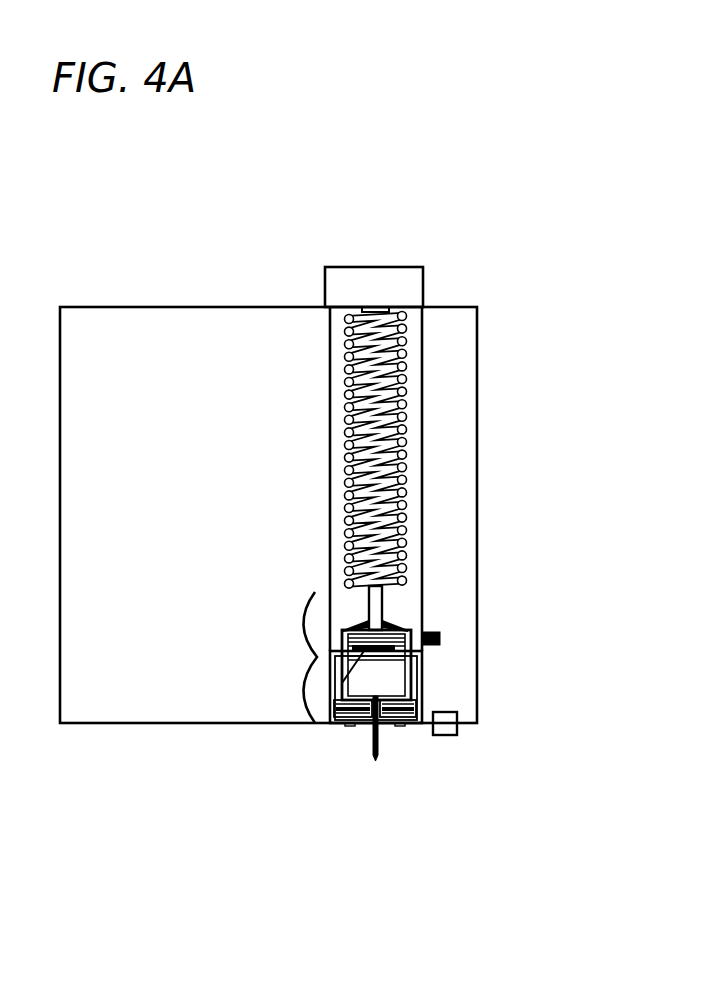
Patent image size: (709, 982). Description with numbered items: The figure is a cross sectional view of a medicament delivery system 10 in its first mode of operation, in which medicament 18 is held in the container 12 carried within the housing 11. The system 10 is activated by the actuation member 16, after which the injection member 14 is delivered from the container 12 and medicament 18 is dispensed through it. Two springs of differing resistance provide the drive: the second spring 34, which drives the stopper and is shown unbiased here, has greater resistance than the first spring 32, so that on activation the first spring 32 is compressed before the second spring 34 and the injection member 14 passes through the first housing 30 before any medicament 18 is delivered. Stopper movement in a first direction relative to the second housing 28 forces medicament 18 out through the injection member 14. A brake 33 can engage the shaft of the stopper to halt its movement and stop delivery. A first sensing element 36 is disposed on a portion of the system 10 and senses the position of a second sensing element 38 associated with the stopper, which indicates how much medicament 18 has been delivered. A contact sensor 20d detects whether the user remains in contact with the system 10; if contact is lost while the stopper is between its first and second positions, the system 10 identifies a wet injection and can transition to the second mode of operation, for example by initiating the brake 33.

The medicament delivery system 10 is at (265, 232).
The housing 11 is at (195, 305).
The container 12 is at (317, 657).
The injection member 14 is at (378, 742).
The actuation member 16 is at (410, 273).
The medicament 18 is at (397, 665).
The contact sensor 20d is at (445, 720).
The second housing 28 is at (405, 672).
The first housing 30 is at (388, 716).
The first spring 32 is at (402, 716).
The brake 33 is at (348, 628).
The second spring 34 is at (400, 338).
The first sensing element 36 is at (440, 638).
The second sensing element 38 is at (328, 723).